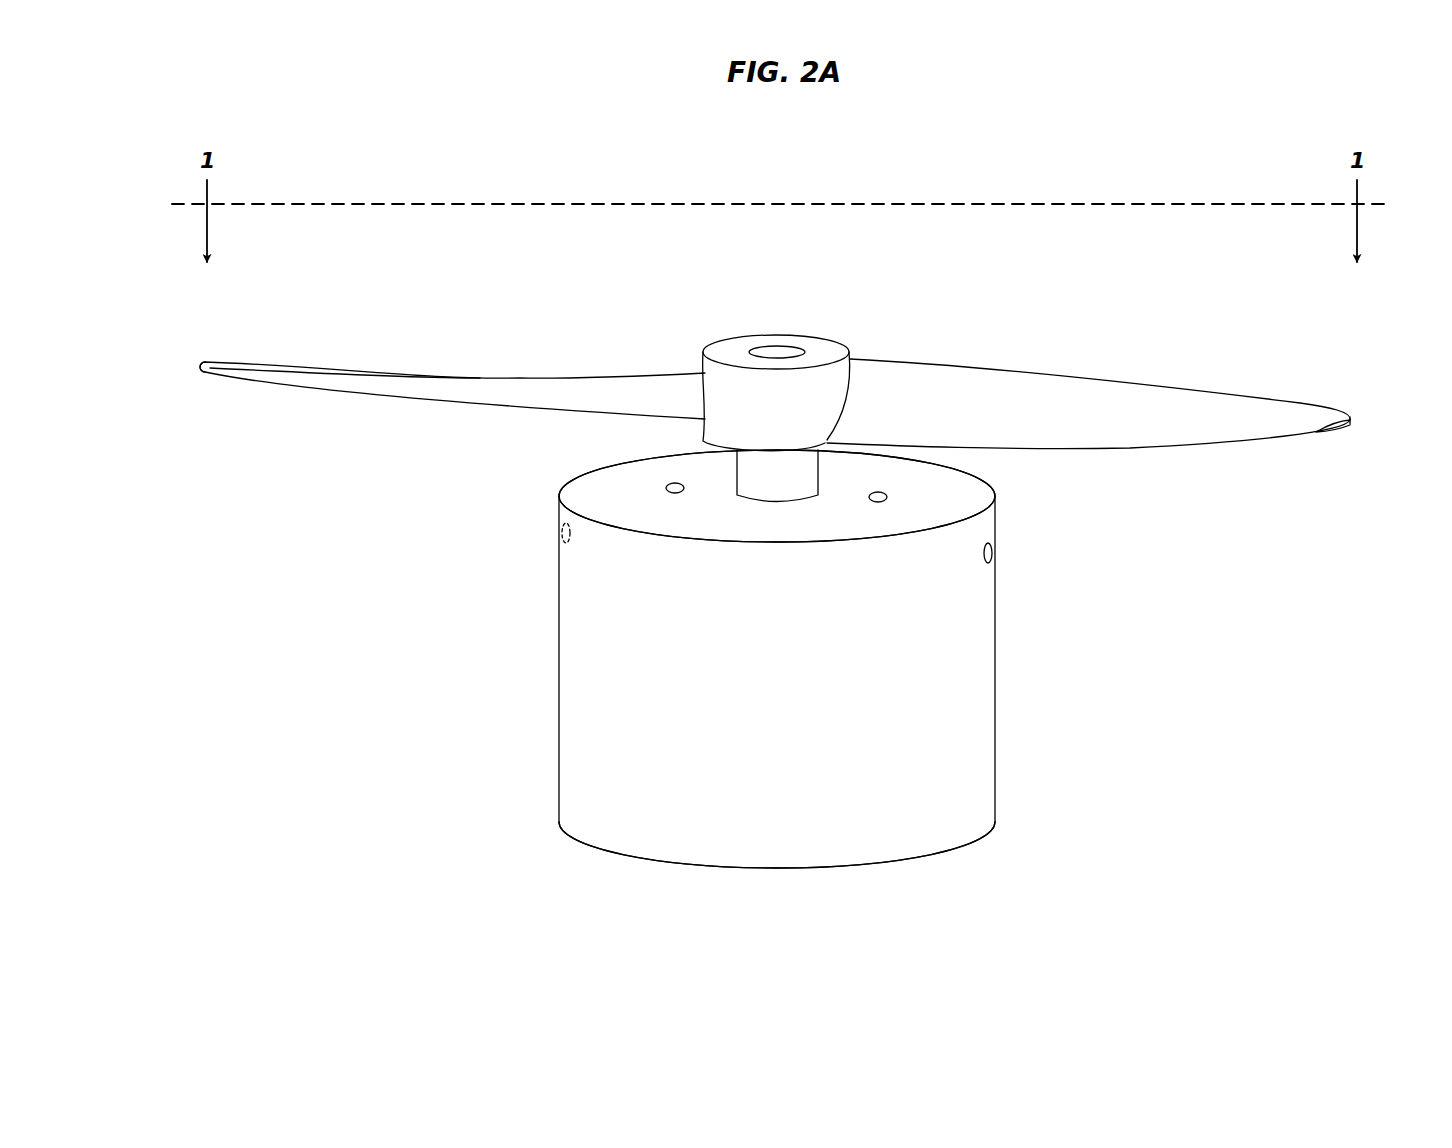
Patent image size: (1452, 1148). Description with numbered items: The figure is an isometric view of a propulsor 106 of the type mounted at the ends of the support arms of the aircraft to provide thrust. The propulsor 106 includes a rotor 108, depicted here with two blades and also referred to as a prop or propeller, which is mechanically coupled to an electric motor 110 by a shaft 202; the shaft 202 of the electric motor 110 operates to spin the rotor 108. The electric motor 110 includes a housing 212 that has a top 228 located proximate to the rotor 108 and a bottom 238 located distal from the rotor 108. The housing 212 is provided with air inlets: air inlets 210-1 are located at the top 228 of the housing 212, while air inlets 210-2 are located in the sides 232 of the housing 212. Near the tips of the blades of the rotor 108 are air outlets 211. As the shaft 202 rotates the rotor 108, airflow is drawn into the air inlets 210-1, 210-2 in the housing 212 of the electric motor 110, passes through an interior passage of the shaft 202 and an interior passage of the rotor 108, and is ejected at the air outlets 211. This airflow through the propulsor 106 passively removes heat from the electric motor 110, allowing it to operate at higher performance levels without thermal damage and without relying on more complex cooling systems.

The propulsor 106 is at (970, 163).
The rotor 108 is at (912, 378).
The electric motor 110 is at (1060, 767).
The shaft 202 is at (797, 482).
The air outlets 211 is at (203, 368).
The housing 212 is at (996, 670).
The top 228 is at (641, 498).
The sides 232 is at (1022, 594).
The bottom 238 is at (853, 893).
The air inlets 210-1 is at (675, 481).
The air inlets 210-2 is at (562, 532).